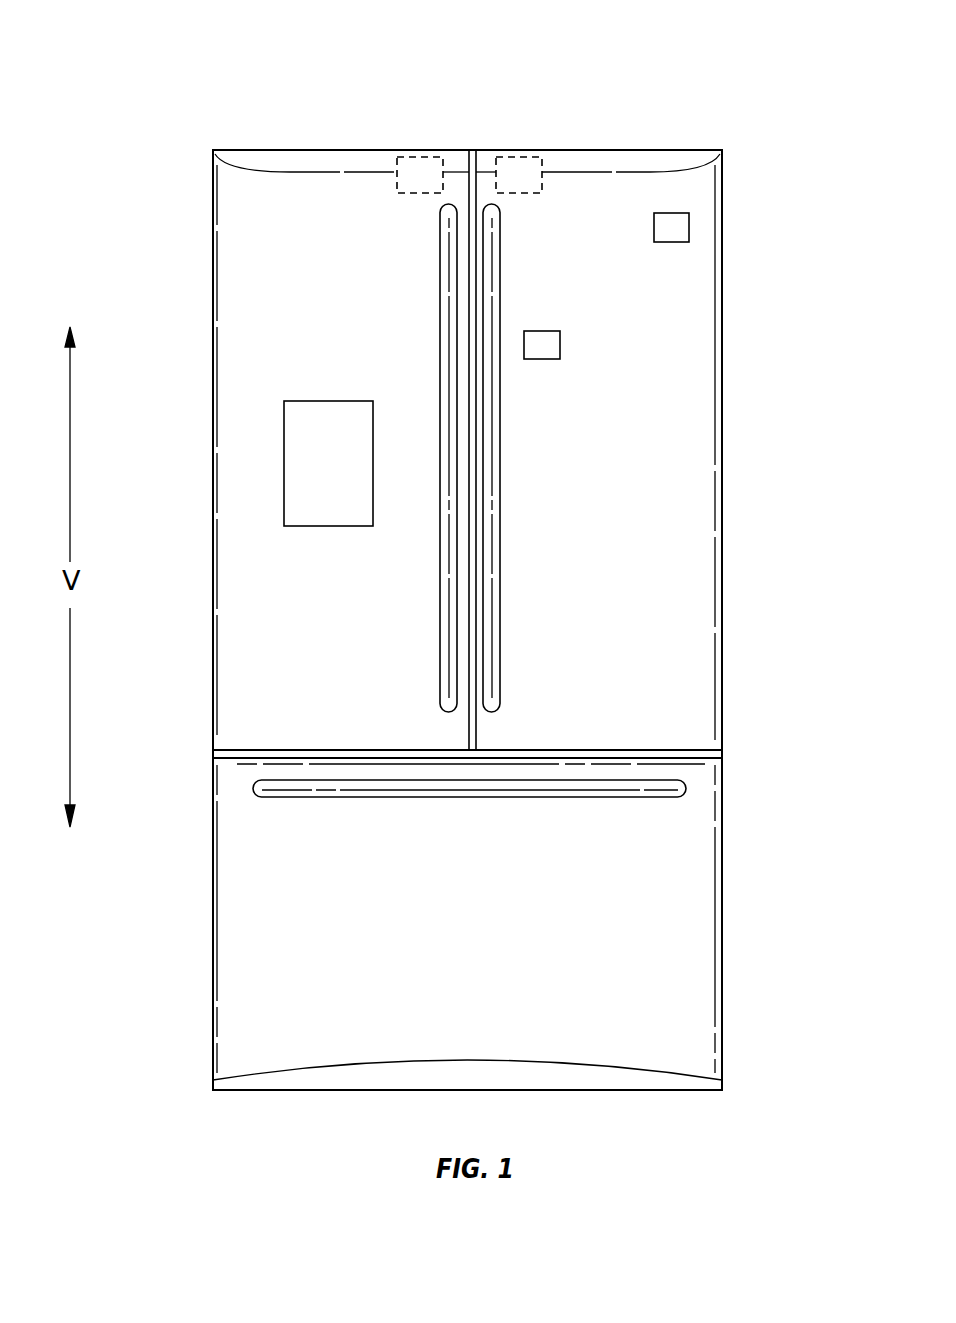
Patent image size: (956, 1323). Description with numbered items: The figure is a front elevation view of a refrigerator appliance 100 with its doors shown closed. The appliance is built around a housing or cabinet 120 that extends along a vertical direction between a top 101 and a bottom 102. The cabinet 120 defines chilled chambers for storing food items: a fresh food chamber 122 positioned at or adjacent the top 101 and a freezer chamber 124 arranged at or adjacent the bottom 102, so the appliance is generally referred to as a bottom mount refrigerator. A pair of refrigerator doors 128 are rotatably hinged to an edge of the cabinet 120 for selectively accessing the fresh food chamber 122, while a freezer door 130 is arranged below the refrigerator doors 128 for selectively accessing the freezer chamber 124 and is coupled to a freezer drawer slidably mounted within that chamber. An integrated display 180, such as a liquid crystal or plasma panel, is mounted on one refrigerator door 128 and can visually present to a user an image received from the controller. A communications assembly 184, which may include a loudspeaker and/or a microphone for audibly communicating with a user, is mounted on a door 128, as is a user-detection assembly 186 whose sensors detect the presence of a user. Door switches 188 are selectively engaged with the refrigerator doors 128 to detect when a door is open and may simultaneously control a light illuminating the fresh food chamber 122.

The refrigerator appliance 100 is at (709, 52).
The top 101 is at (200, 128).
The bottom 102 is at (200, 1077).
The cabinet 120 is at (722, 755).
The fresh food chamber 122 is at (690, 562).
The freezer chamber 124 is at (668, 962).
The refrigerator doors 128 is at (311, 192).
The freezer door 130 is at (242, 946).
The integrated display 180 is at (284, 453).
The communications assembly 184 is at (673, 235).
The user-detection assembly 186 is at (540, 352).
The door switches 188 is at (515, 157).